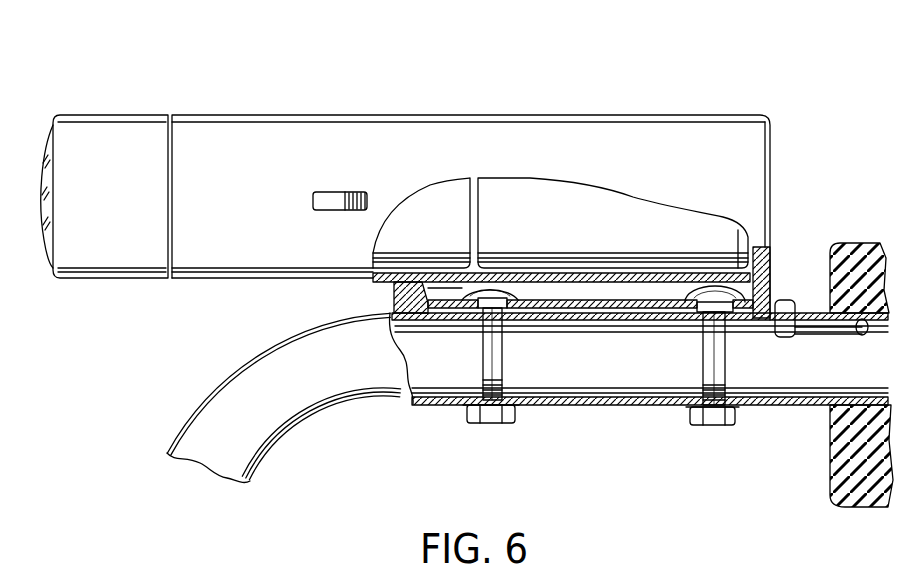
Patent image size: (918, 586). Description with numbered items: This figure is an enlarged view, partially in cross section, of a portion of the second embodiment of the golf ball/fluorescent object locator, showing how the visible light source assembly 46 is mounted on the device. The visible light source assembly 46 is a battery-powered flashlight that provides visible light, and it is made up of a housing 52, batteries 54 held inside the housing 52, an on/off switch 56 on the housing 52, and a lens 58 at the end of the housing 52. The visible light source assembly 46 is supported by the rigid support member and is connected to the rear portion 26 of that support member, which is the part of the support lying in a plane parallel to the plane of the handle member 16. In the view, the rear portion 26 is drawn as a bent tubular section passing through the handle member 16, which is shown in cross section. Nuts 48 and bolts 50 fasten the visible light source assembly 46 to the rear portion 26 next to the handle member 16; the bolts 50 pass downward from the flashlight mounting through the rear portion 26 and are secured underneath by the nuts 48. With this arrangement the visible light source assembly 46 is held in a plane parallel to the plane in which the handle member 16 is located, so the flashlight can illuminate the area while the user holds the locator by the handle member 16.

The handle member 16 is at (857, 277).
The rear portion 26 is at (578, 404).
The visible light source assembly 46 is at (401, 175).
The nuts 48 is at (474, 414).
The bolts 50 is at (502, 355).
The housing 52 is at (607, 148).
The batteries 54 is at (443, 207).
The on/off switch 56 is at (337, 194).
The lens 58 is at (48, 167).